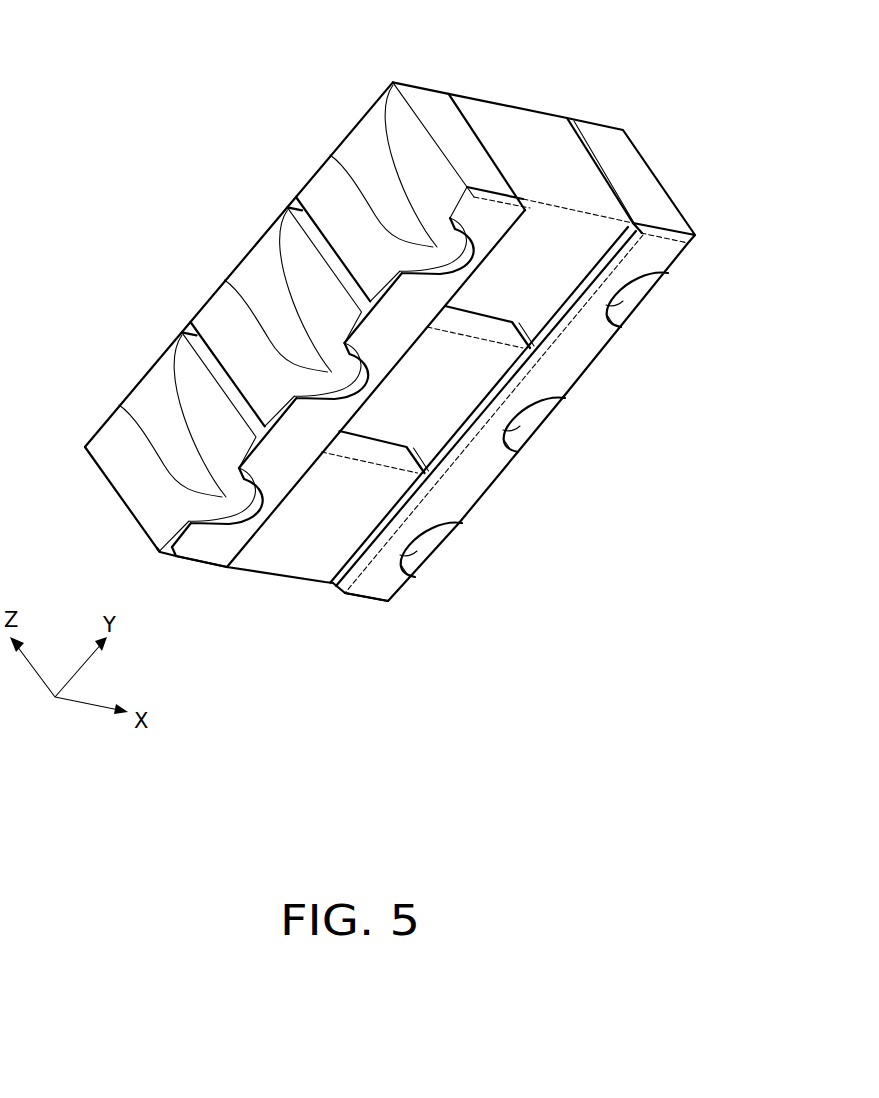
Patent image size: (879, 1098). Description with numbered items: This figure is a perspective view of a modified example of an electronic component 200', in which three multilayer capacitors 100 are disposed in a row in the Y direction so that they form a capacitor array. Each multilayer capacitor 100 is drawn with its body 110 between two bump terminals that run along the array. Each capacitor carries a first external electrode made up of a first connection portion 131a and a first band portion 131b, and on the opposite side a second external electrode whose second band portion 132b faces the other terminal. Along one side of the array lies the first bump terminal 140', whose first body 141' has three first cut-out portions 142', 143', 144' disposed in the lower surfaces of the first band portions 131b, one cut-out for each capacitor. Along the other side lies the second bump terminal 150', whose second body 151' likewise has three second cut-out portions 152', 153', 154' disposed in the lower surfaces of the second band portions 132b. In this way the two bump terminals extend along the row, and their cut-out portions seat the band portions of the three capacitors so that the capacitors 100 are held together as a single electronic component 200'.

The electronic component 200' is at (383, 355).
The multilayer capacitor 100 is at (543, 115).
The cell body 110 is at (510, 120).
The first connection portion 131a is at (355, 150).
The first band portion 131b is at (330, 155).
The second band portion 132b is at (637, 287).
The first bump terminal 140' is at (185, 602).
The first body 141' is at (214, 590).
The first cut-out portion 142' is at (169, 434).
The first cut-out portion 143' is at (270, 328).
The first cut-out portion 144' is at (408, 201).
The second bump terminal 150' is at (473, 407).
The second body 151' is at (381, 621).
The second cut-out portion 152' is at (443, 562).
The second cut-out portion 153' is at (530, 460).
The second cut-out portion 154' is at (632, 258).